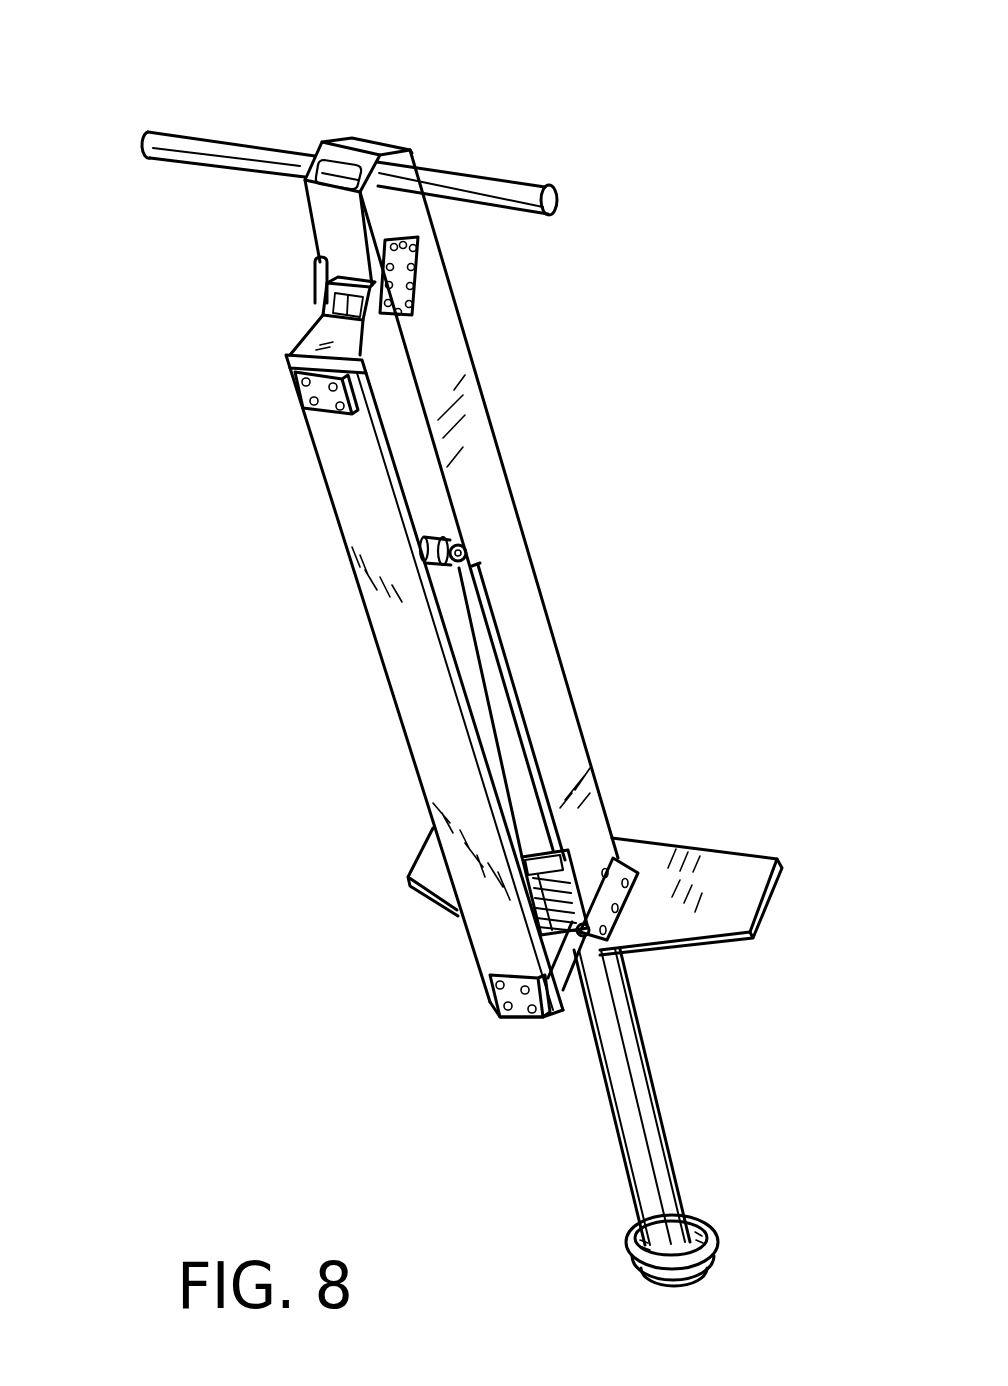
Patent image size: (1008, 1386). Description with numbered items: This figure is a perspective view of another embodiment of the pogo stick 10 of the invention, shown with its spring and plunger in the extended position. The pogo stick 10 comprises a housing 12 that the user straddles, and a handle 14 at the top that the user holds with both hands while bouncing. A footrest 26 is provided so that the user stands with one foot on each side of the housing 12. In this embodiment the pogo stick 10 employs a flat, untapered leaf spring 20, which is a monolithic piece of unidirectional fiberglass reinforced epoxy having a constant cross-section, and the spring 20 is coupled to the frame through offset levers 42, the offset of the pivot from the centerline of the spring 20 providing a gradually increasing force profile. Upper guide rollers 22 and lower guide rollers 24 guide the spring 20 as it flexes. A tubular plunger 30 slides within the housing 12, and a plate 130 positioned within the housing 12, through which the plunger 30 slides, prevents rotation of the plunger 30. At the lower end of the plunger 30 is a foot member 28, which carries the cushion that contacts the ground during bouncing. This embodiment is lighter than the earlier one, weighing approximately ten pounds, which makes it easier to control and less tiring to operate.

The pogo stick 10 is at (222, 88).
The housing 12 is at (488, 486).
The handle 14 is at (518, 186).
The leaf spring 20 is at (378, 628).
The upper guide rollers 22 is at (468, 553).
The lower guide rollers 24 is at (580, 873).
The footrest 26 is at (738, 866).
The foot member 28 is at (716, 1238).
The tubular plunger 30 is at (655, 1141).
The offset levers 42 is at (325, 328).
The plate 130 is at (528, 866).